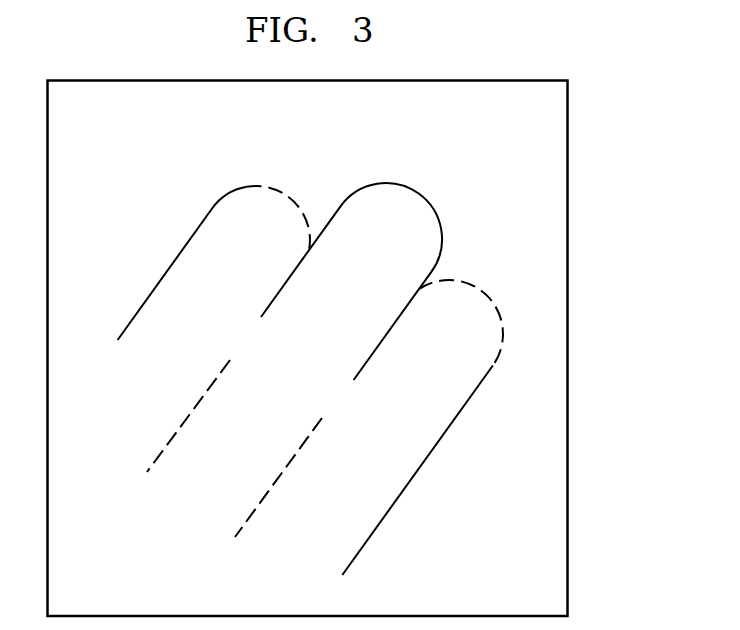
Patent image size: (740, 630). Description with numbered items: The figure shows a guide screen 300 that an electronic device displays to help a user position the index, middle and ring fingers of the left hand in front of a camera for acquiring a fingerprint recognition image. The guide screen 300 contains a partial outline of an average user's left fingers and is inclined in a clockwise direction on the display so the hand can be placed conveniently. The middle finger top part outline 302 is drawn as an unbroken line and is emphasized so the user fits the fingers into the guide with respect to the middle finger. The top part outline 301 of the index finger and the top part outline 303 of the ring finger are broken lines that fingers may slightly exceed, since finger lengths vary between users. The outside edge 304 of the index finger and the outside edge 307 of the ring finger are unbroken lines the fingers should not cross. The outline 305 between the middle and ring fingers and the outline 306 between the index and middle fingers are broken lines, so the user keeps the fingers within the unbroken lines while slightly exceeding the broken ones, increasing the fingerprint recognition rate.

The guide screen 300 is at (568, 349).
The top part outline of the index finger 301 is at (264, 166).
The middle finger top part outline 302 is at (395, 175).
The top part outline of the ring finger 303 is at (475, 270).
The outside edge of the index finger 304 is at (152, 260).
The outline between the middle finger and the ring finger 305 is at (193, 426).
The outline between the index finger and the middle finger 306 is at (263, 521).
The outside edge of the ring finger 307 is at (427, 486).